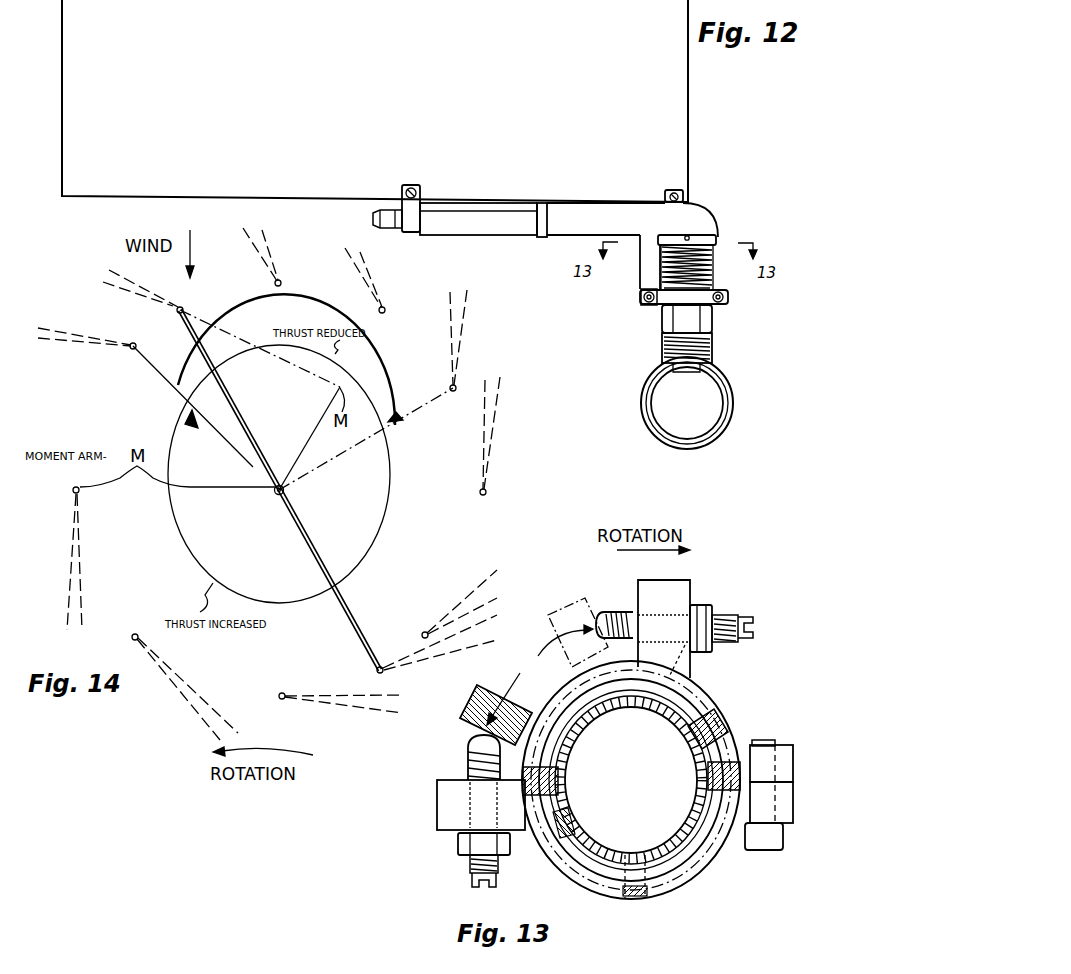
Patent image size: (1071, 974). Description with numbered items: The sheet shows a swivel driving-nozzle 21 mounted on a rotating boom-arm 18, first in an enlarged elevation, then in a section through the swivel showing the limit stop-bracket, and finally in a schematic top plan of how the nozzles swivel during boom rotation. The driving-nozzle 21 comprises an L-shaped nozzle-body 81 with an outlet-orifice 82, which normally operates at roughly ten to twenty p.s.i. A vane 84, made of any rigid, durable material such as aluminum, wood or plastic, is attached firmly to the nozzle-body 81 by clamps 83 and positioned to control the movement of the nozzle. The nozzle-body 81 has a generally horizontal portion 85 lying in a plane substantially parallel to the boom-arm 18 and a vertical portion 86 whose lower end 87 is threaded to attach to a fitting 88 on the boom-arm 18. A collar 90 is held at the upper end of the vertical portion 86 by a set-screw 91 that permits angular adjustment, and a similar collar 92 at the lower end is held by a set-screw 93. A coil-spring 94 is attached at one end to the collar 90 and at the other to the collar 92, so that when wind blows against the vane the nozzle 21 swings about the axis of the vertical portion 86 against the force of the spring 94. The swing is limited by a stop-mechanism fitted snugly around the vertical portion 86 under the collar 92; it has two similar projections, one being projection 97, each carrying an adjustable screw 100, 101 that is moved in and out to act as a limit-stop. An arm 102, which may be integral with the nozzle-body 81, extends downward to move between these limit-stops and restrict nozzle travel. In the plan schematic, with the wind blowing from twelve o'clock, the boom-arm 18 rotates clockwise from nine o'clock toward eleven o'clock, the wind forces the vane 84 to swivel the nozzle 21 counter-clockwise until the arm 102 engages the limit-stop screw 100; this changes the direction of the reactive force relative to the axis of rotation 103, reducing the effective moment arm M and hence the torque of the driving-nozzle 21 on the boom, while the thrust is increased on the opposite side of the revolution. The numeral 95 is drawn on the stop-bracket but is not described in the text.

In FIG. 12, the boom-arm 18 is at (730, 398).
In FIG. 14, the boom-arm 18 is at (192, 333).
In FIG. 12, the driving-nozzle 21 is at (513, 189).
In FIG. 14, the driving-nozzle 21 is at (170, 314).
In FIG. 12, the nozzle-body 81 is at (578, 210).
In FIG. 12, the outlet-orifice 82 is at (390, 210).
In FIG. 12, the clamps 83 is at (421, 203).
In FIG. 12, the vane 84 is at (402, 45).
In FIG. 12, the horizontal portion 85 is at (624, 229).
In FIG. 12, the vertical portion 86 is at (712, 264).
In FIG. 13, the vertical portion 86 is at (670, 720).
In FIG. 12, the lower end 87 is at (677, 370).
In FIG. 12, the fitting 88 is at (662, 347).
In FIG. 12, the collar 90 is at (714, 238).
In FIG. 12, the set-screw 91 is at (687, 236).
In FIG. 12, the collar 92 is at (727, 295).
In FIG. 13, the collar 92 is at (675, 885).
In FIG. 12, the set-screw 93 is at (687, 283).
In FIG. 13, the set-screw 93 is at (633, 897).
In FIG. 12, the coil-spring 94 is at (707, 253).
In FIG. 13, the coil-spring 94 is at (702, 852).
In FIG. 12, the stop bracket 95 is at (661, 303).
In FIG. 13, the stop bracket 95 is at (694, 576).
In FIG. 12, the projection 97 is at (649, 302).
In FIG. 12, the adjustable screw 100 is at (640, 296).
In FIG. 13, the adjustable screw 100 is at (468, 737).
In FIG. 13, the adjustable screw 101 is at (614, 612).
In FIG. 12, the arm 102 is at (640, 275).
In FIG. 13, the arm 102 is at (572, 668).
In FIG. 14, the axis of rotation 103 is at (277, 494).